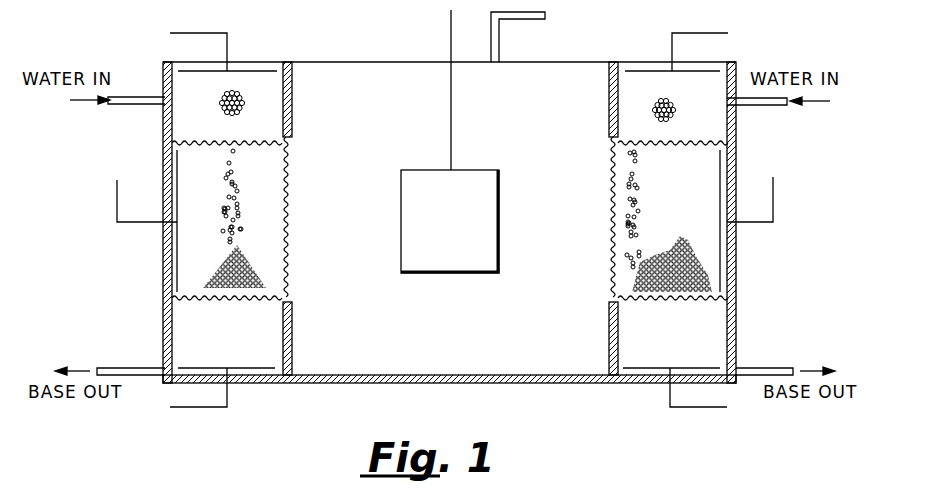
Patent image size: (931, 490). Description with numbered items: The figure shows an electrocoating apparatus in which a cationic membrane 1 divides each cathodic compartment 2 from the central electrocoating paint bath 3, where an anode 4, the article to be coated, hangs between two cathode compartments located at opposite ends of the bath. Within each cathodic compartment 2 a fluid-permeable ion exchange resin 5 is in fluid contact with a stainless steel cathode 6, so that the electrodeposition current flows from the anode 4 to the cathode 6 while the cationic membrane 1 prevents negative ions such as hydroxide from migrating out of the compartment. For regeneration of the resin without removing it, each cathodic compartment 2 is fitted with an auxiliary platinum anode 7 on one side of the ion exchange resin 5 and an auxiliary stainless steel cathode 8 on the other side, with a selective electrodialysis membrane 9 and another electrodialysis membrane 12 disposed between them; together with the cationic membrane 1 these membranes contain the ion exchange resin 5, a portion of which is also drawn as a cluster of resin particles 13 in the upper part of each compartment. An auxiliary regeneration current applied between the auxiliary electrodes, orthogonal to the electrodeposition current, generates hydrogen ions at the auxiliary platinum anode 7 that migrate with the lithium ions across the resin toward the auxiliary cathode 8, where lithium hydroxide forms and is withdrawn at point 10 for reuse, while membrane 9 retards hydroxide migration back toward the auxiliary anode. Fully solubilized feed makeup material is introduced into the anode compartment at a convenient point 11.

The cationic membrane 1 is at (287, 228).
The cathodic compartment 2 is at (263, 197).
The electrocoating paint bath 3 is at (486, 358).
The anode 4 is at (500, 248).
The ion exchange resin 5 is at (260, 272).
The cathode 6 is at (177, 256).
The auxiliary platinum anode 7 is at (250, 71).
The auxiliary stainless steel cathode 8 is at (258, 368).
The selective electrodialysis membrane 9 is at (233, 300).
The withdrawal point 10 is at (132, 368).
The feed makeup introduction point 11 is at (501, 60).
The second selective electrodialysis membrane 12 is at (262, 152).
The resin particle cluster 13 is at (245, 103).